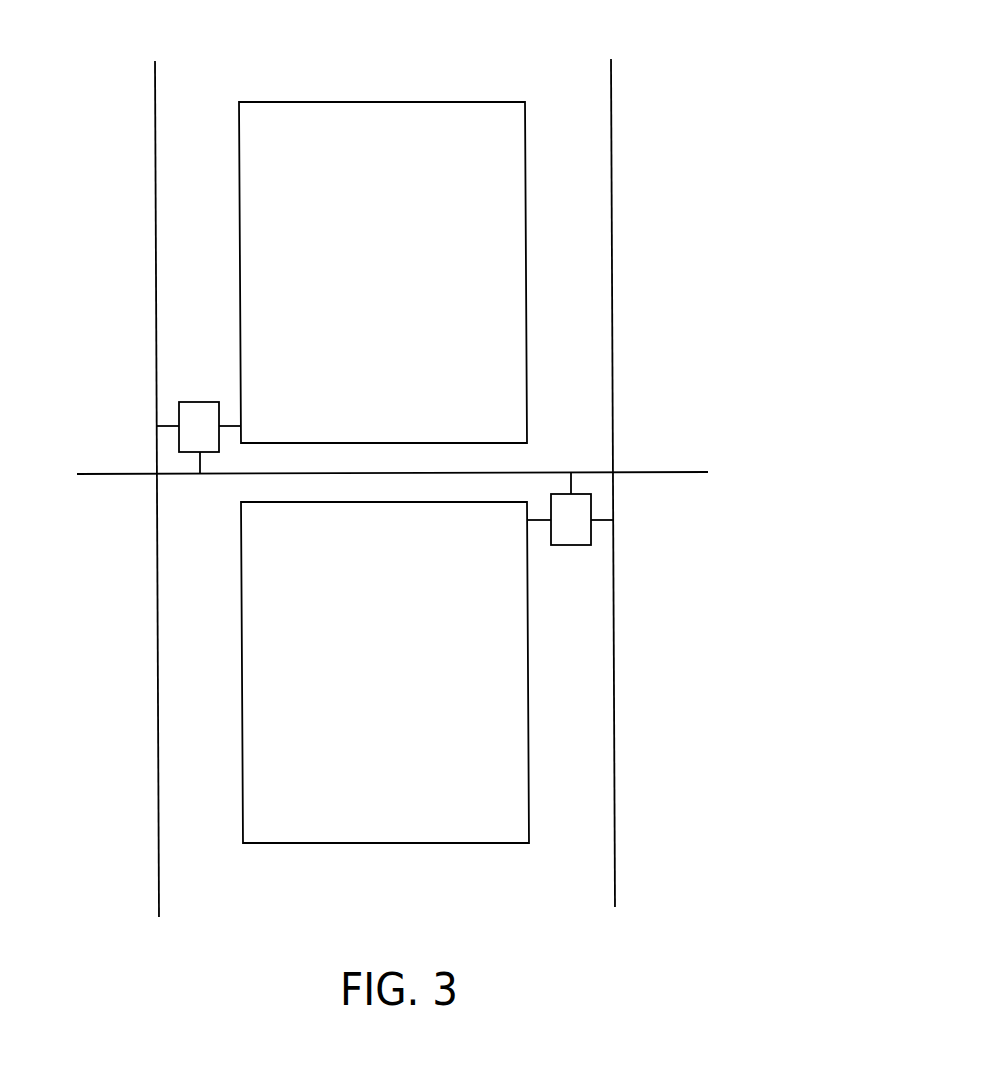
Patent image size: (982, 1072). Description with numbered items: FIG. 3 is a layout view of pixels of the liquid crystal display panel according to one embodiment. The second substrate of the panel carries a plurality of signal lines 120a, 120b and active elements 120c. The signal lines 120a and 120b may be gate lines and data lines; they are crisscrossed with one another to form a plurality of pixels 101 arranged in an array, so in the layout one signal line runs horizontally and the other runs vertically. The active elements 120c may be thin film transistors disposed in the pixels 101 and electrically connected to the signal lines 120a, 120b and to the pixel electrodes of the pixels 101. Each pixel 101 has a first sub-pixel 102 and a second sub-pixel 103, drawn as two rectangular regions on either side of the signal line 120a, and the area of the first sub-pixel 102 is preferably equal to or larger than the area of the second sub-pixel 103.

The pixel 101 is at (623, 318).
The first sub-pixel 102 is at (538, 225).
The second sub-pixel 103 is at (545, 762).
The signal line 120a is at (648, 475).
The signal line 120b is at (615, 415).
The active element 120c is at (200, 400).